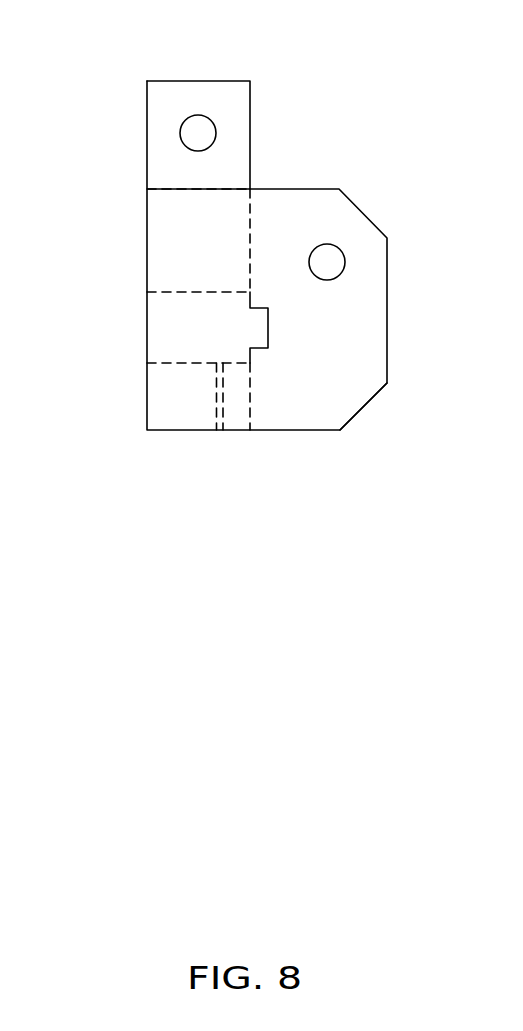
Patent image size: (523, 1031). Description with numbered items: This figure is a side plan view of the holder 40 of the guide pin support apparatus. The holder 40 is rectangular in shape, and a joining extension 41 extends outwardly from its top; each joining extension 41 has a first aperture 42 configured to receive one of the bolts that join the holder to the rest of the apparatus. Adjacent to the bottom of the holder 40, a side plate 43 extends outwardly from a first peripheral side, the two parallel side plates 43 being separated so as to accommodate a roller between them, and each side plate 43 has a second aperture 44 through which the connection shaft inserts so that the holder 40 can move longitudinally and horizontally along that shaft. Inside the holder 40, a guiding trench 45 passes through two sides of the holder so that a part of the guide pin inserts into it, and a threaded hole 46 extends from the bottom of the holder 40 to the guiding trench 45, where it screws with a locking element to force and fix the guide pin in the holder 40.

The holder 40 is at (168, 235).
The joining extension 41 is at (220, 88).
The first aperture 42 is at (193, 130).
The side plate 43 is at (342, 397).
The second aperture 44 is at (333, 257).
The guiding trench 45 is at (170, 330).
The threaded hole 46 is at (198, 415).